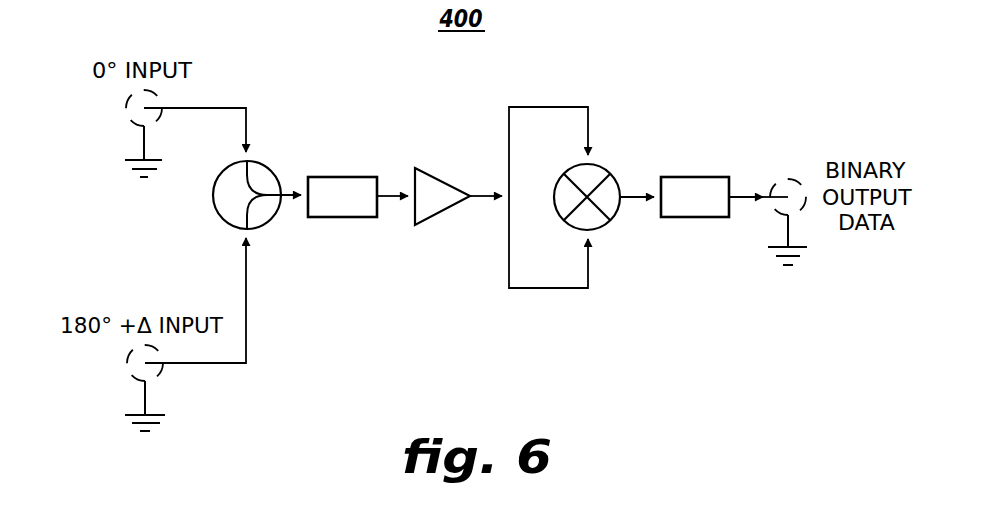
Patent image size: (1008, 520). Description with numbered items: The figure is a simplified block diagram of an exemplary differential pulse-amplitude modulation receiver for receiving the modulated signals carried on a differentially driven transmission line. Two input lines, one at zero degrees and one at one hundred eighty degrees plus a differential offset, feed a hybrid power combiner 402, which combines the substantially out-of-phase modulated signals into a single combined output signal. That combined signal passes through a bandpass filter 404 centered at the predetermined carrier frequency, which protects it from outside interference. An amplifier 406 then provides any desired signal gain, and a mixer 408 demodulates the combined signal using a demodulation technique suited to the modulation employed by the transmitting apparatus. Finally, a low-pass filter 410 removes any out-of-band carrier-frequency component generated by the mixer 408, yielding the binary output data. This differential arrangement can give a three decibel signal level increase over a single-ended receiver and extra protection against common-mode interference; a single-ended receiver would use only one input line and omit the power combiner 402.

The hybrid power combiner 402 is at (214, 208).
The bandpass filter 404 is at (348, 177).
The amplifier 406 is at (437, 213).
The mixer 408 is at (612, 215).
The low-pass filter 410 is at (694, 177).